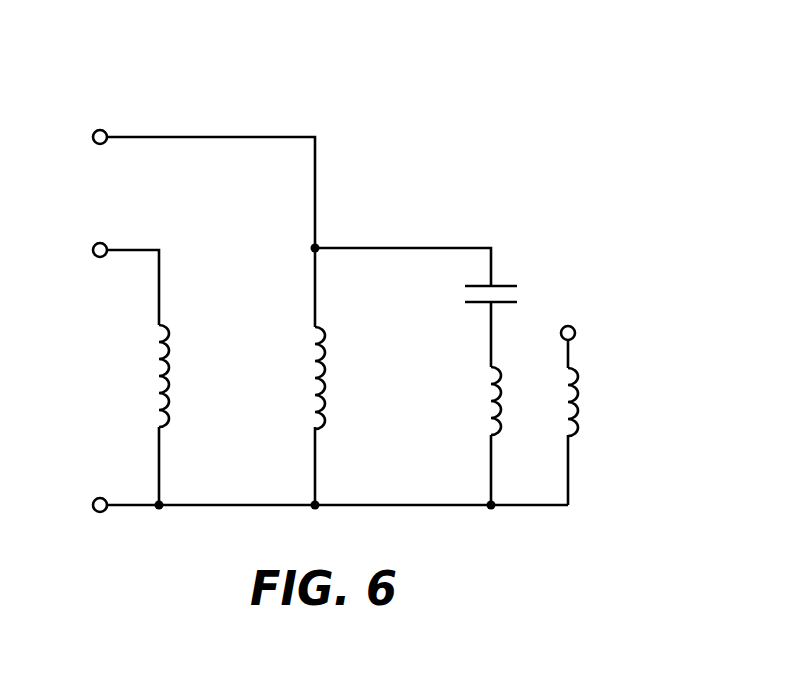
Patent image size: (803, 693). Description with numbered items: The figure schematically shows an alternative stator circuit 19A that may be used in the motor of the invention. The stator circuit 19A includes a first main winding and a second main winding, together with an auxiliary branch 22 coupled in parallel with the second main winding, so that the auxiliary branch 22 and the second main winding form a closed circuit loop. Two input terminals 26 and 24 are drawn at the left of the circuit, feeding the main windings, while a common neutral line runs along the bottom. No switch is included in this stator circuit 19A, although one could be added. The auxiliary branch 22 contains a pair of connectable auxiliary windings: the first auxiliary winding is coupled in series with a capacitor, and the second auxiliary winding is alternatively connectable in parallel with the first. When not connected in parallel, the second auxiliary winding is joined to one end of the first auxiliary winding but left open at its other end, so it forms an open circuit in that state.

The stator circuit 19A is at (478, 111).
The high speed terminal 26 is at (80, 136).
The low speed terminal 24 is at (80, 249).
The auxiliary branch 22 is at (597, 245).